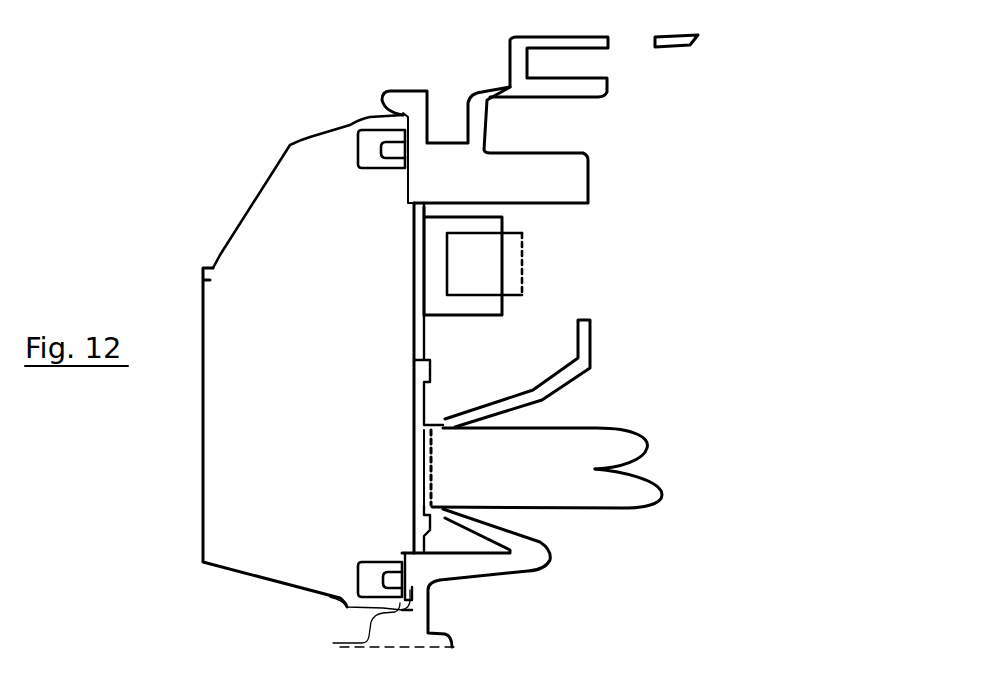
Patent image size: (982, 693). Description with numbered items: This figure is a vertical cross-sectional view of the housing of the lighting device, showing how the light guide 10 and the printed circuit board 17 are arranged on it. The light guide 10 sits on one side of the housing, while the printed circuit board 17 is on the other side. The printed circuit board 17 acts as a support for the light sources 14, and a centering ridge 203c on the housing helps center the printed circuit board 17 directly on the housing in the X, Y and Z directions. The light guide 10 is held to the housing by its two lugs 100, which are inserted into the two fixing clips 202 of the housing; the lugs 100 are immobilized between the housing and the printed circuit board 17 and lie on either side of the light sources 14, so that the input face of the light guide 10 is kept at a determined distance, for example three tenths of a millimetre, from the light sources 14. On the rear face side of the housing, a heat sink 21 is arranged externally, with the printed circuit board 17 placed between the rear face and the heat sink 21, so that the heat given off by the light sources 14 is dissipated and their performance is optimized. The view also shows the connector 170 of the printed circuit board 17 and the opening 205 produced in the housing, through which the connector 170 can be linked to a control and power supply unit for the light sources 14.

The light guide 10 is at (573, 490).
The light sources 14 is at (433, 438).
The printed circuit board 17 is at (415, 460).
The heat sink 21 is at (243, 318).
The lugs 100 is at (430, 424).
The connector 170 is at (490, 223).
The fixing clips 202 is at (587, 325).
The centering ridge 203c is at (557, 178).
The opening 205 is at (590, 215).